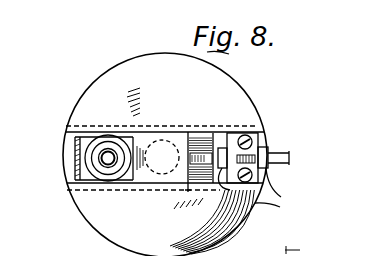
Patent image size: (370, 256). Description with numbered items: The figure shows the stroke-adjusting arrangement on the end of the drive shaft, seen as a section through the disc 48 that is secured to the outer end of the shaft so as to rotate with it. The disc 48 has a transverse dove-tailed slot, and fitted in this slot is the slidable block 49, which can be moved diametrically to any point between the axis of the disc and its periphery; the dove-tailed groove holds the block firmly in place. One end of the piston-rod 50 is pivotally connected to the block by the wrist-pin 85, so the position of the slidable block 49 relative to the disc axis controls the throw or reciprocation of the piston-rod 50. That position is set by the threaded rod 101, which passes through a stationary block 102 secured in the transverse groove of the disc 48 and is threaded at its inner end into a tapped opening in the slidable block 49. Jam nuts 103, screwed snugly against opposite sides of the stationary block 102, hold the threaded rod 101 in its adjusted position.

The disc 48 is at (243, 97).
The slidable block 49 is at (130, 178).
The piston-rod 50 is at (75, 141).
The wrist-pin 85 is at (103, 158).
The threaded rod 101 is at (290, 155).
The stationary block 102 is at (261, 133).
The jam nuts 103 is at (265, 181).